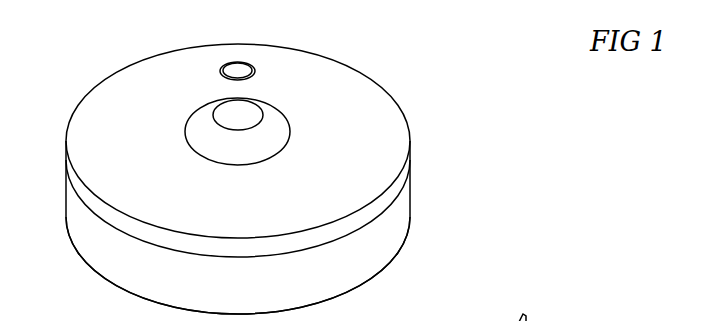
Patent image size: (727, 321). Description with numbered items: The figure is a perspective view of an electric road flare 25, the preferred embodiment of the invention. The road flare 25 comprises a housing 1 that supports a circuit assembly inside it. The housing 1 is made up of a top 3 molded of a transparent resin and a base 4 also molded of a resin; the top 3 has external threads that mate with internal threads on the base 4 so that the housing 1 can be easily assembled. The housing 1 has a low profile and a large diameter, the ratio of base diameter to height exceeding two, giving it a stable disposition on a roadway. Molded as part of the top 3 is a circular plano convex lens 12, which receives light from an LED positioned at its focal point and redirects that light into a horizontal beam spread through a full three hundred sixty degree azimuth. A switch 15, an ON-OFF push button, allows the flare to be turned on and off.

The housing 1 is at (118, 100).
The top 3 is at (143, 77).
The base 4 is at (118, 262).
The circular plano convex lens 12 is at (271, 135).
The switch 15 is at (408, 320).
The road flare 25 is at (600, 96).